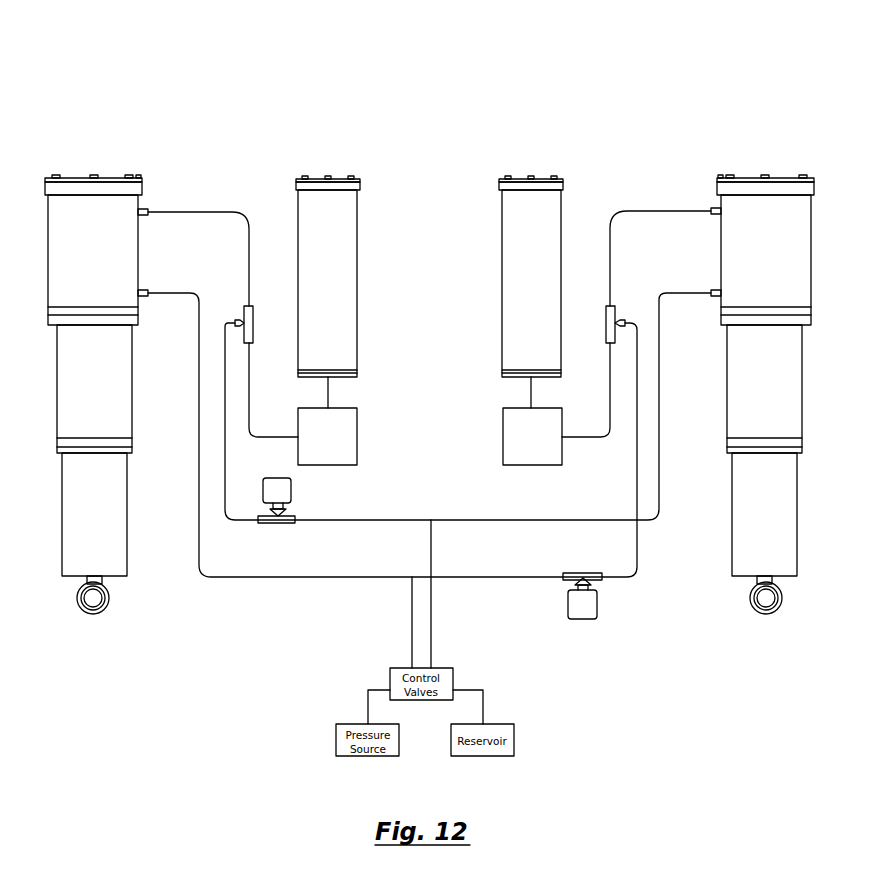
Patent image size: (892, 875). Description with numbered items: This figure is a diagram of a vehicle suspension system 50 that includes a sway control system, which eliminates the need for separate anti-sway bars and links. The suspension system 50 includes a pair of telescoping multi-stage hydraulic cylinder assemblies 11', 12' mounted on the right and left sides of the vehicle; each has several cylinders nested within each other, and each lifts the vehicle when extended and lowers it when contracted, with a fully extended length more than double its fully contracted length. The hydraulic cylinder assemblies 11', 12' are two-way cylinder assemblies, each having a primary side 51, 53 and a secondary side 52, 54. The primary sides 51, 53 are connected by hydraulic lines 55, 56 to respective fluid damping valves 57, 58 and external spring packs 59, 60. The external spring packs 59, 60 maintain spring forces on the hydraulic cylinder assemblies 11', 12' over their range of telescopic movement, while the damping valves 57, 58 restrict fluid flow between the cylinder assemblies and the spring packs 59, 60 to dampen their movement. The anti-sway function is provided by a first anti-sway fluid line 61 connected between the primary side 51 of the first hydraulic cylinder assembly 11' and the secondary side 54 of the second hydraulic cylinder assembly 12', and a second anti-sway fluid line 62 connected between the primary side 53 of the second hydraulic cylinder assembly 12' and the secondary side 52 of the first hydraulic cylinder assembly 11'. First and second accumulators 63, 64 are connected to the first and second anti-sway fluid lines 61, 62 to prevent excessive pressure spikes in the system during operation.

The vehicle suspension system 50 is at (318, 77).
The first hydraulic cylinder assembly 11' is at (93, 370).
The second hydraulic cylinder assembly 12' is at (765, 373).
The primary side 51 is at (148, 209).
The secondary side 52 is at (148, 290).
The primary side 53 is at (711, 210).
The secondary side 54 is at (712, 290).
The hydraulic line 55 is at (208, 209).
The hydraulic line 56 is at (622, 208).
The fluid damping valve 57 is at (355, 422).
The fluid damping valve 58 is at (505, 417).
The external spring pack 59 is at (344, 238).
The external spring pack 60 is at (509, 243).
The first anti-sway fluid line 61 is at (225, 494).
The second anti-sway fluid line 62 is at (633, 575).
The first accumulator 63 is at (291, 492).
The second accumulator 64 is at (577, 602).